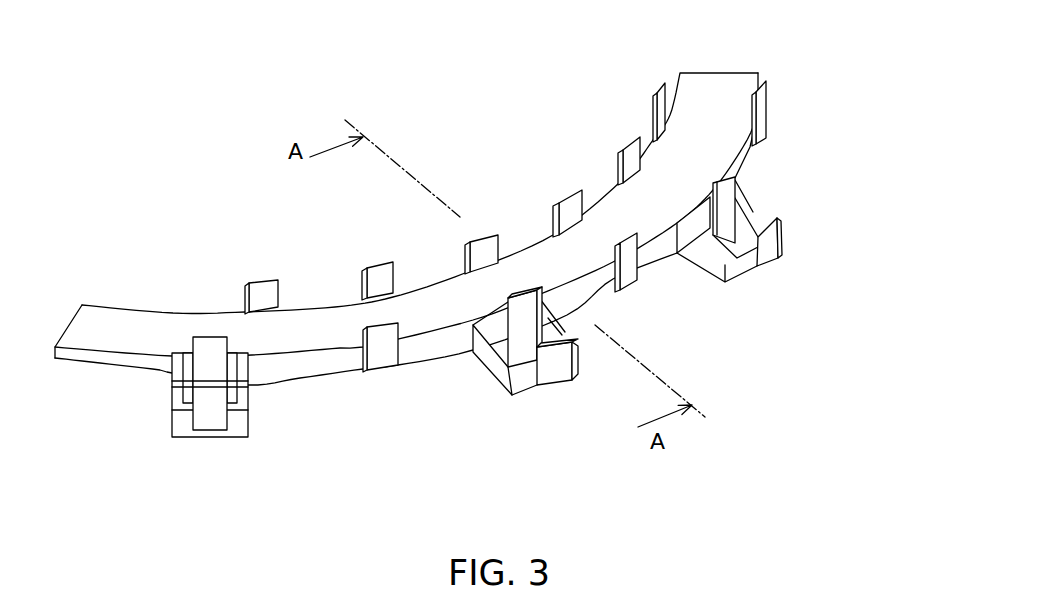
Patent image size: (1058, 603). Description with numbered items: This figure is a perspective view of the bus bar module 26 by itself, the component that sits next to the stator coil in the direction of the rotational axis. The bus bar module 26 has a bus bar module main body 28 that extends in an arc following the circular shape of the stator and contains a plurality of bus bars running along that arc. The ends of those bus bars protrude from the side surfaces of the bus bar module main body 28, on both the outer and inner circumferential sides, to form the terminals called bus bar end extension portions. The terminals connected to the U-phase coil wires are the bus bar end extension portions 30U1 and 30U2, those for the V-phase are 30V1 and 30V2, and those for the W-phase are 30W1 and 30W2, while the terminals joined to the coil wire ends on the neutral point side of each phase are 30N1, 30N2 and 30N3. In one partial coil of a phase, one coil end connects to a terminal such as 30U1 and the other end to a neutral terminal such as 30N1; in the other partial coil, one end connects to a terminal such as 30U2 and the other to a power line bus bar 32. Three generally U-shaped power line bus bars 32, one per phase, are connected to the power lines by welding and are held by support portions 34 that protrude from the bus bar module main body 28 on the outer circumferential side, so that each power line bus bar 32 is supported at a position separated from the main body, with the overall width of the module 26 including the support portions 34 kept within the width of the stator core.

The bus bar module 26 is at (218, 85).
The bus bar module main body 28 is at (178, 318).
The bus bar end extension portion 30U1 is at (263, 280).
The bus bar end extension portion 30V1 is at (375, 263).
The bus bar end extension portion 30W1 is at (487, 232).
The bus bar end extension portion 30U2 is at (580, 190).
The bus bar end extension portion 30V2 is at (627, 138).
The bus bar end extension portion 30W2 is at (660, 83).
The bus bar end extension portion 30N1 is at (380, 350).
The bus bar end extension portion 30N2 is at (632, 265).
The bus bar end extension portion 30N3 is at (773, 108).
The power line bus bar 32 is at (212, 410).
The support portion 34 is at (482, 352).